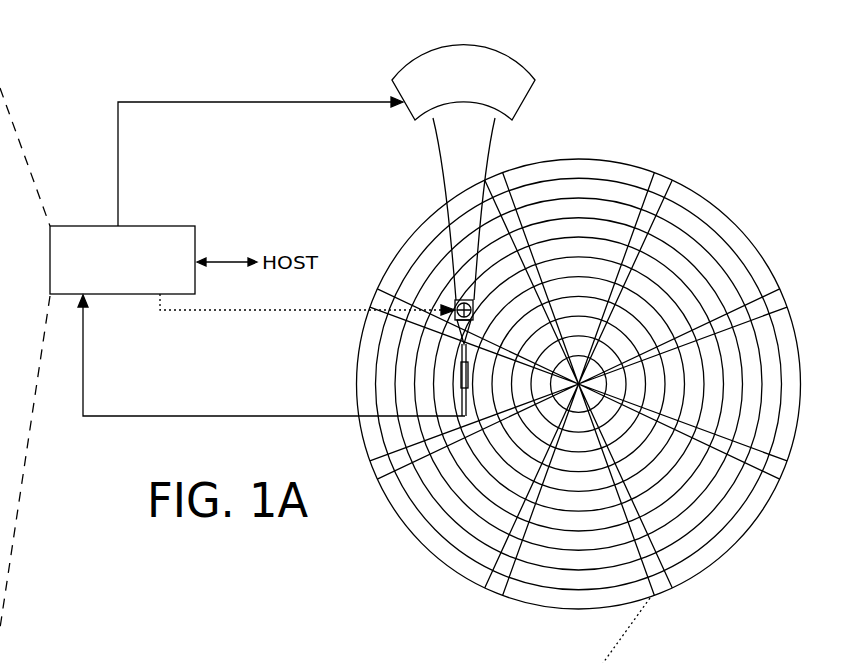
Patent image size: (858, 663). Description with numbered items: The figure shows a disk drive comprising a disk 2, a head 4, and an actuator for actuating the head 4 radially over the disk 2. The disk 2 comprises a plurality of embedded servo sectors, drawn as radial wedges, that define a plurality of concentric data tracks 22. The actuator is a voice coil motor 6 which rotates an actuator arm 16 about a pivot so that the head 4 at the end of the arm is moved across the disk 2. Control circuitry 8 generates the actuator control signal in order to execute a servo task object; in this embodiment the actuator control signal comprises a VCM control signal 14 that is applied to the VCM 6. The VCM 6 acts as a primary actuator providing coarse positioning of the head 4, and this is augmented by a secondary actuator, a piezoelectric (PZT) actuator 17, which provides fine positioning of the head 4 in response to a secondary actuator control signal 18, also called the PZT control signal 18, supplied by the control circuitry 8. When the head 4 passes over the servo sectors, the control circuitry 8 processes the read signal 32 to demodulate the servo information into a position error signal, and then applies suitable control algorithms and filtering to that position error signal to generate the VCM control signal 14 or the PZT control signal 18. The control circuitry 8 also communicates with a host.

The disk 2 is at (734, 209).
The head 4 is at (456, 381).
The voice coil motor 6 is at (412, 119).
The control circuitry 8 is at (162, 225).
The VCM control signal 14 is at (117, 177).
The actuator arm 16 is at (446, 189).
The piezoelectric (PZT) actuator 17 is at (486, 310).
The secondary actuator control signal 18 is at (291, 313).
The data tracks 22 is at (581, 188).
The read signal 32 is at (257, 418).